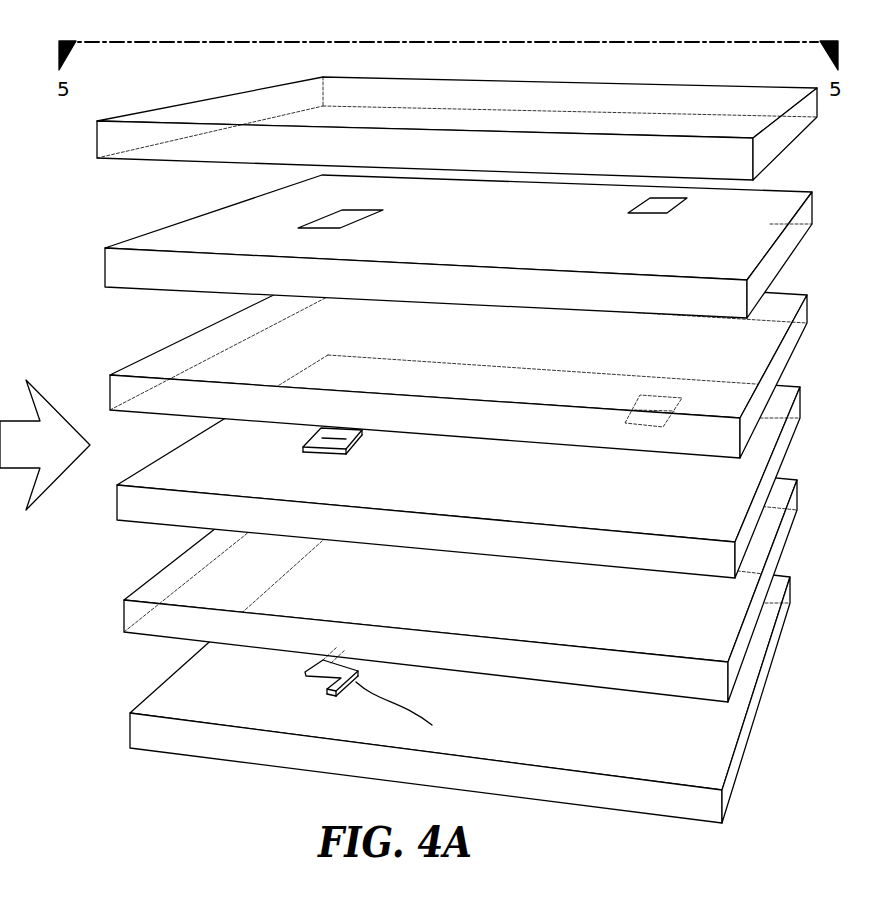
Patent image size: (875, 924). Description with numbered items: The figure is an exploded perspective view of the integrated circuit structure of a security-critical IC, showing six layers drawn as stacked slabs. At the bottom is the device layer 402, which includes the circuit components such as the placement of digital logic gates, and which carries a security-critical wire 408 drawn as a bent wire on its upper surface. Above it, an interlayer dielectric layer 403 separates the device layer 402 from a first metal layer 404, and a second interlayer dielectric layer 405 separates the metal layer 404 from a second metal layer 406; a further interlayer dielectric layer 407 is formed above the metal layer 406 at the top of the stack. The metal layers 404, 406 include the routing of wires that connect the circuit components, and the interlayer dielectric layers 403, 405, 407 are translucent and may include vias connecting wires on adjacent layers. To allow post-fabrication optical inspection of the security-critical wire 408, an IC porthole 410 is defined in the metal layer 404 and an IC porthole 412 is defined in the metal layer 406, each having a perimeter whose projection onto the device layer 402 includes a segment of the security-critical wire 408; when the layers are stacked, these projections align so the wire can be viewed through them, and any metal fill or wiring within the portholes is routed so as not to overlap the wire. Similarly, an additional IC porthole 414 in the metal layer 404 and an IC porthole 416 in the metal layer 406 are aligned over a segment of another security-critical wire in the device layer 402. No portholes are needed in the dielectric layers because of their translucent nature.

The device layer 402 is at (145, 731).
The interlayer dielectric layer 403 is at (133, 620).
The metal layer 404 is at (123, 501).
The interlayer dielectric layer 405 is at (152, 365).
The metal layer 406 is at (118, 265).
The interlayer dielectric layer 407 is at (105, 140).
The security-critical wire 408 is at (307, 662).
The IC porthole 410 is at (315, 440).
The IC porthole 412 is at (335, 222).
The IC porthole 414 is at (642, 427).
The IC porthole 416 is at (650, 205).